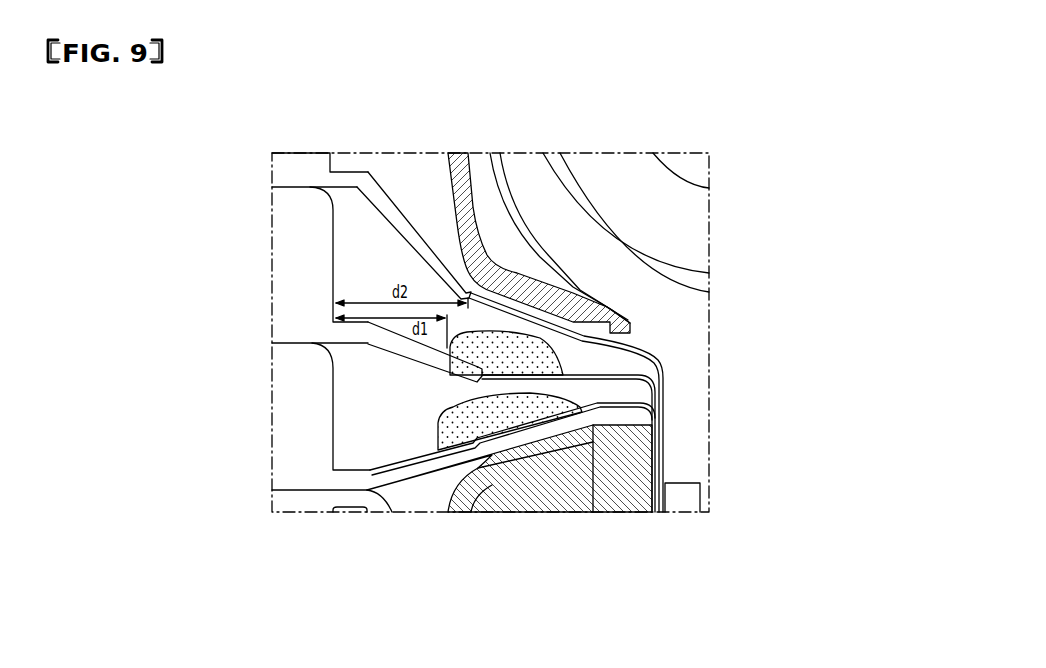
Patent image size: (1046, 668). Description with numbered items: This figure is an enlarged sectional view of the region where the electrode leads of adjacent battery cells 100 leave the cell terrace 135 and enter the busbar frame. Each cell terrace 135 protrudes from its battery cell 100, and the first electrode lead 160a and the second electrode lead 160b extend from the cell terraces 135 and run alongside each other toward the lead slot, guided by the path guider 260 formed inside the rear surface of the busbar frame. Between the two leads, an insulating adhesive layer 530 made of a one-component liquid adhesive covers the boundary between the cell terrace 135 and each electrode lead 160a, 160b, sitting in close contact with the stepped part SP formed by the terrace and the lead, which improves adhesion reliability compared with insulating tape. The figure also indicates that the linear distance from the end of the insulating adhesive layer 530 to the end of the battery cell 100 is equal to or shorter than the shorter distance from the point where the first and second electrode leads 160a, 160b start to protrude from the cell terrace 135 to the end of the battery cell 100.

The battery cell 100 is at (295, 228).
The cell terrace 135 is at (387, 192).
The path guider 260 is at (447, 177).
The insulating adhesive layer 530 is at (540, 358).
The first electrode lead 160a is at (588, 295).
The second electrode lead 160b is at (627, 375).
The stepped part SP is at (530, 365).